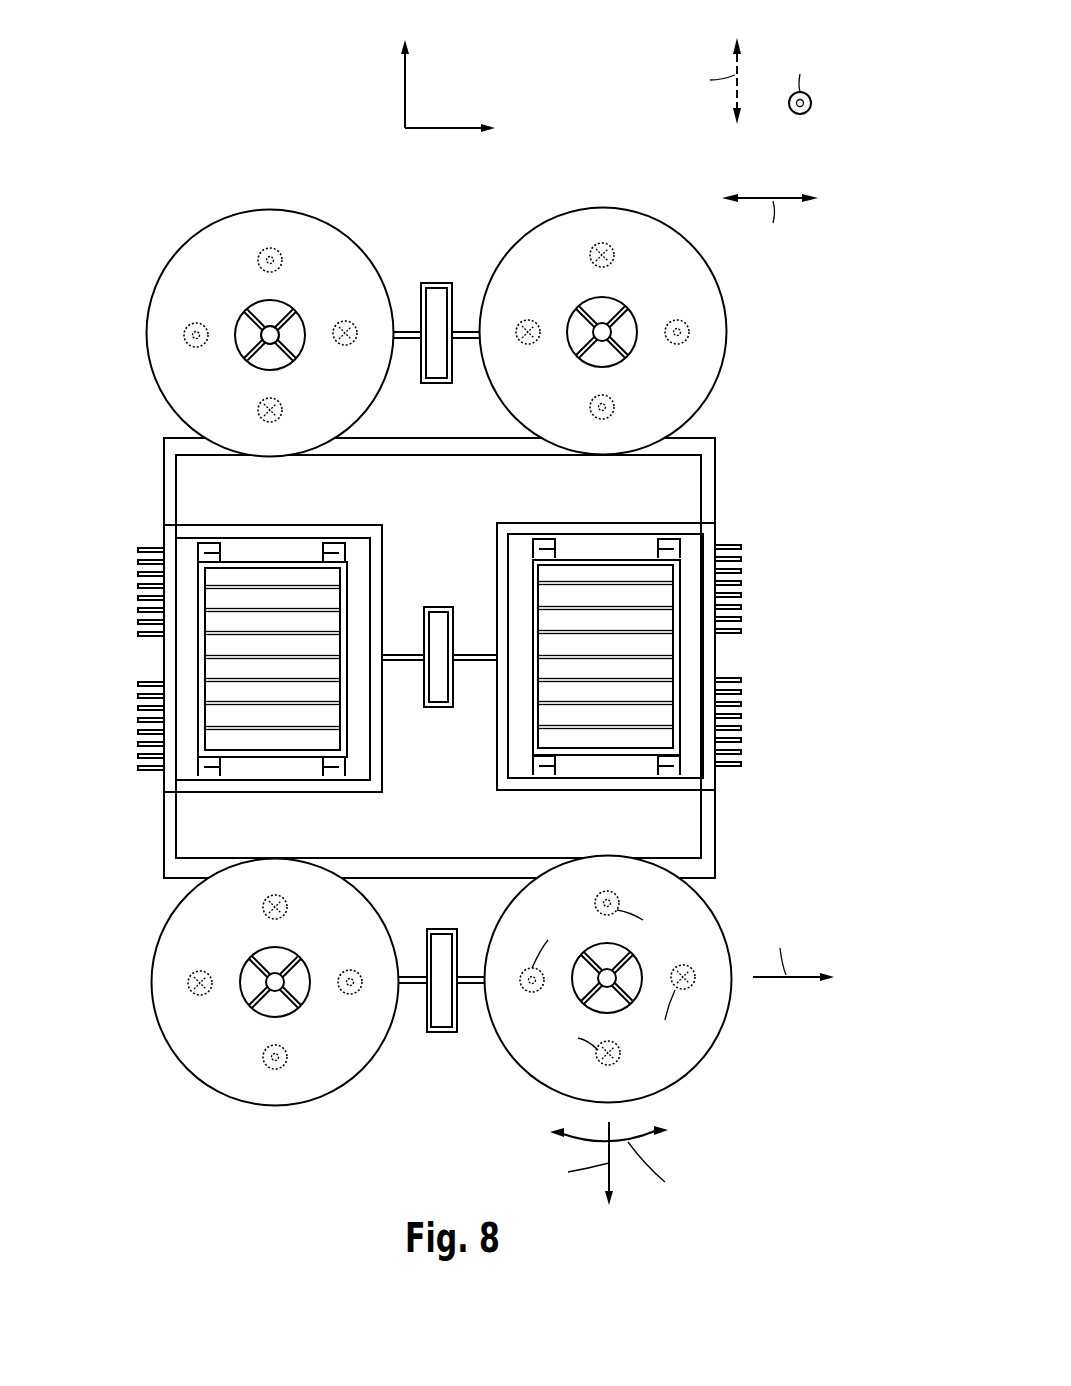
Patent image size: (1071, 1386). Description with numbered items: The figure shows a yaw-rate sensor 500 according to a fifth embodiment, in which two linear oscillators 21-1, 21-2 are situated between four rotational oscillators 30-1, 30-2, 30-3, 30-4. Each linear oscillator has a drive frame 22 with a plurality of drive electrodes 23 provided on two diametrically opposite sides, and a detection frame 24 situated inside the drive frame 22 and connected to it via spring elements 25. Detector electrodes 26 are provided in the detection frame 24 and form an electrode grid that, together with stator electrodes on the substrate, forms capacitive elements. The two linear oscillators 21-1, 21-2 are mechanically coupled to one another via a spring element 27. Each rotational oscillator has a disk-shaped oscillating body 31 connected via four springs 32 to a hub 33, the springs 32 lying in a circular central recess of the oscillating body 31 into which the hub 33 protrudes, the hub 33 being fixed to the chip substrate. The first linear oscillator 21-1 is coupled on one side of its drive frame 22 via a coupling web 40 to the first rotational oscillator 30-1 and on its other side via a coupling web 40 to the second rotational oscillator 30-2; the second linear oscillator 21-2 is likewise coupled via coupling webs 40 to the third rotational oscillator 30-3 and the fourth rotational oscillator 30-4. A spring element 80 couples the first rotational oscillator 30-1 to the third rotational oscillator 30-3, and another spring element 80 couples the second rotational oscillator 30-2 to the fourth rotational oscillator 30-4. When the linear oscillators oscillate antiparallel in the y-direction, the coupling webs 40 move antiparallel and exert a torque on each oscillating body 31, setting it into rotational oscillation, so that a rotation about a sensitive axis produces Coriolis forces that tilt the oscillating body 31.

The micromechanical rotation rate sensor 500 is at (100, 125).
The first rotational oscillator 30-1 is at (247, 288).
The second rotational oscillator 30-2 is at (273, 1126).
The third rotational oscillator 30-3 is at (597, 184).
The fourth rotational oscillator 30-4 is at (728, 1085).
The oscillating body 31 is at (187, 288).
The springs 32 is at (258, 358).
The hub 33 is at (270, 337).
The spring element 80 is at (435, 283).
The coupling web 40 is at (167, 492).
The first linear oscillator 21-1 is at (391, 666).
The second linear oscillator 21-2 is at (749, 655).
The drive frame 22 is at (217, 785).
The drive electrodes 23 is at (152, 772).
The detection frame 24 is at (312, 757).
The spring elements 25 is at (545, 548).
The detector electrodes 26 is at (305, 610).
The spring element 27 is at (440, 708).